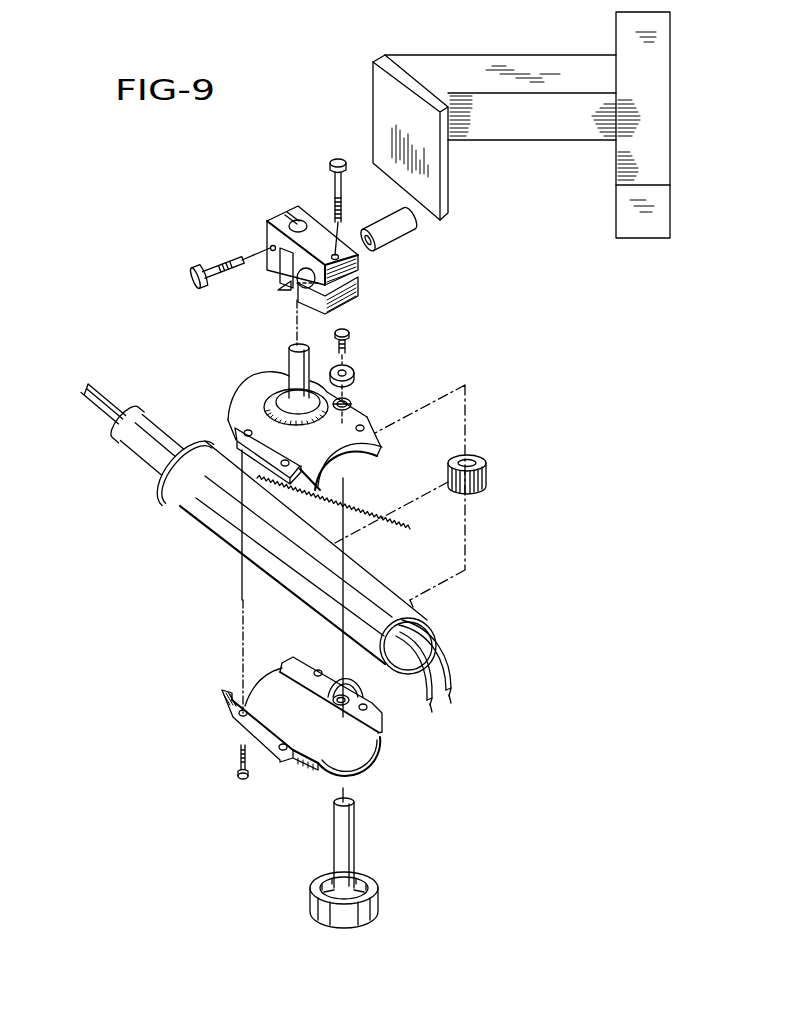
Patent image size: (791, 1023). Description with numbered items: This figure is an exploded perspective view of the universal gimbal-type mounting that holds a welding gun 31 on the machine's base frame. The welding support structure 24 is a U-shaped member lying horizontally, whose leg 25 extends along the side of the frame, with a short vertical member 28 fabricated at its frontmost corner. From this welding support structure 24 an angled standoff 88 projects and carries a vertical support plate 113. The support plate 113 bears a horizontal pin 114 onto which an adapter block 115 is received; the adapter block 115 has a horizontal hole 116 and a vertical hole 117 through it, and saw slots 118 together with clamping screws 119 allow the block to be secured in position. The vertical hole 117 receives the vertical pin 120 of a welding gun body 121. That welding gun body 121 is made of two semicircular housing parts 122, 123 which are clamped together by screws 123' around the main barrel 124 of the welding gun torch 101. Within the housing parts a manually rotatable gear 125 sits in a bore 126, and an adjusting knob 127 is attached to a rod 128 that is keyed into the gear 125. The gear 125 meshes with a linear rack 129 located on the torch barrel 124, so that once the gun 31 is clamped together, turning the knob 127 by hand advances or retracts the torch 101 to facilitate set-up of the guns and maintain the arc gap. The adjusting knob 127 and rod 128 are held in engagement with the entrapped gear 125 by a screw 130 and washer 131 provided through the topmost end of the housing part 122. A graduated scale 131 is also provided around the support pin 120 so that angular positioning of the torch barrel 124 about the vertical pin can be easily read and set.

The welding support structure 24 is at (614, 225).
The leg of the U-shaped member 25 is at (627, 203).
The short vertical member 28 is at (618, 153).
The welding gun 31 is at (137, 466).
The standoff 88 is at (510, 63).
The welding gun torch 101 is at (92, 400).
The vertical support plate 113 is at (378, 97).
The horizontal pin 114 is at (393, 237).
The adapter block 115 is at (347, 303).
The horizontal hole 116 is at (307, 285).
The vertical hole 117 is at (298, 226).
The saw slot 118 is at (282, 219).
The clamping screw 119 is at (338, 160).
The vertical pin 120 is at (292, 362).
The welding gun body 121 is at (238, 378).
The semicircular housing part 122 is at (345, 462).
The semicircular housing part 123 is at (261, 716).
The screw 123' is at (201, 761).
The main barrel 124 is at (210, 517).
The manually rotatable gear 125 is at (487, 470).
The bore 126 is at (332, 672).
The adjusting knob 127 is at (312, 896).
The rod 128 is at (337, 825).
The linear rack 129 is at (373, 563).
The screw 130 is at (349, 342).
The washer 131 is at (240, 400).